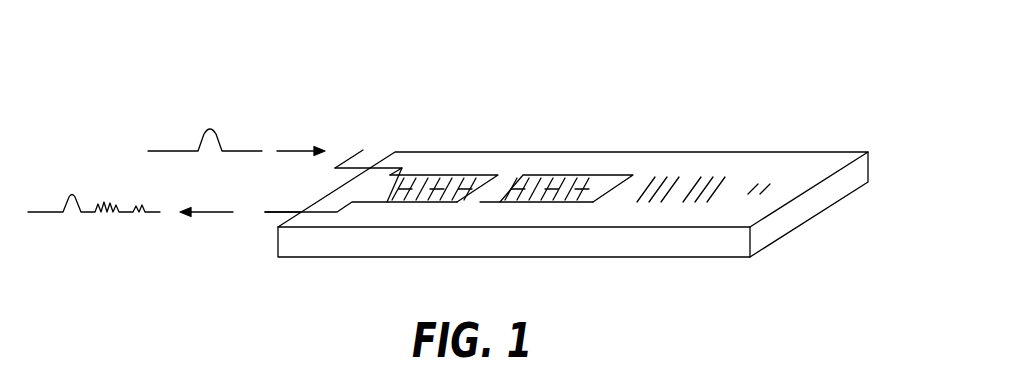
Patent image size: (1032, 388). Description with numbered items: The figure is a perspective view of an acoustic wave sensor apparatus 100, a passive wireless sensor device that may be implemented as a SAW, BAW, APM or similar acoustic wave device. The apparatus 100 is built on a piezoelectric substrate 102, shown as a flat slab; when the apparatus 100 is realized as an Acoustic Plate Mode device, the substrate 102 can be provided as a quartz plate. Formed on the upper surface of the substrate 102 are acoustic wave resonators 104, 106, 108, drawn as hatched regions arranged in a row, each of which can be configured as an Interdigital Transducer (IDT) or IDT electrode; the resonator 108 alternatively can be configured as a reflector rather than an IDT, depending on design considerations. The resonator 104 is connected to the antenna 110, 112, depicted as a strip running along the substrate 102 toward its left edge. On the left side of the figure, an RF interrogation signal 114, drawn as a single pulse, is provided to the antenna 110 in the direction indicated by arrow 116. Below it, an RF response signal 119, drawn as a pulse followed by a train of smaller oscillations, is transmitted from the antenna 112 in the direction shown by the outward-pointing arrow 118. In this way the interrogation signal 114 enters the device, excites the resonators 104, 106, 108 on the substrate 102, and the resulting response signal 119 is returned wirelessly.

The acoustic wave sensor apparatus 100 is at (825, 72).
The piezoelectric substrate 102 is at (827, 192).
The acoustic wave resonator 104 is at (433, 173).
The acoustic wave resonator 106 is at (562, 173).
The acoustic wave resonator 108 is at (710, 168).
The antenna 110 is at (375, 152).
The antenna 112 is at (267, 223).
The RF interrogation signal 114 is at (193, 132).
The arrow 116 is at (293, 150).
The output direction 118 is at (218, 213).
The RF response signal 119 is at (97, 217).